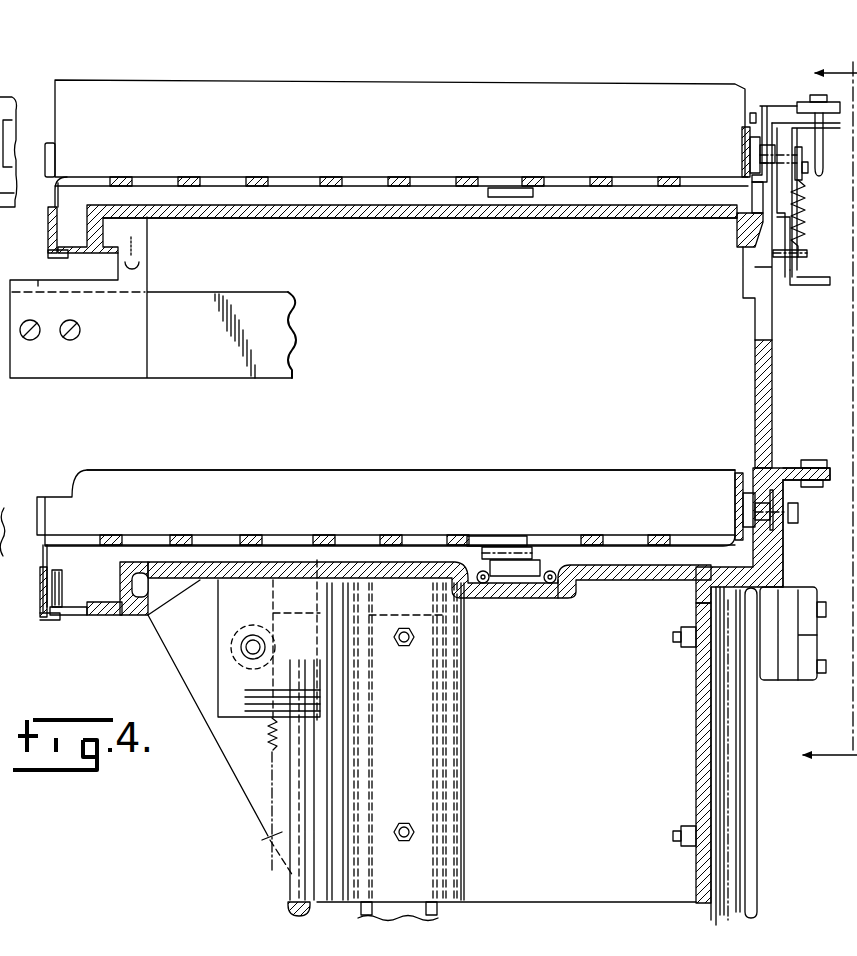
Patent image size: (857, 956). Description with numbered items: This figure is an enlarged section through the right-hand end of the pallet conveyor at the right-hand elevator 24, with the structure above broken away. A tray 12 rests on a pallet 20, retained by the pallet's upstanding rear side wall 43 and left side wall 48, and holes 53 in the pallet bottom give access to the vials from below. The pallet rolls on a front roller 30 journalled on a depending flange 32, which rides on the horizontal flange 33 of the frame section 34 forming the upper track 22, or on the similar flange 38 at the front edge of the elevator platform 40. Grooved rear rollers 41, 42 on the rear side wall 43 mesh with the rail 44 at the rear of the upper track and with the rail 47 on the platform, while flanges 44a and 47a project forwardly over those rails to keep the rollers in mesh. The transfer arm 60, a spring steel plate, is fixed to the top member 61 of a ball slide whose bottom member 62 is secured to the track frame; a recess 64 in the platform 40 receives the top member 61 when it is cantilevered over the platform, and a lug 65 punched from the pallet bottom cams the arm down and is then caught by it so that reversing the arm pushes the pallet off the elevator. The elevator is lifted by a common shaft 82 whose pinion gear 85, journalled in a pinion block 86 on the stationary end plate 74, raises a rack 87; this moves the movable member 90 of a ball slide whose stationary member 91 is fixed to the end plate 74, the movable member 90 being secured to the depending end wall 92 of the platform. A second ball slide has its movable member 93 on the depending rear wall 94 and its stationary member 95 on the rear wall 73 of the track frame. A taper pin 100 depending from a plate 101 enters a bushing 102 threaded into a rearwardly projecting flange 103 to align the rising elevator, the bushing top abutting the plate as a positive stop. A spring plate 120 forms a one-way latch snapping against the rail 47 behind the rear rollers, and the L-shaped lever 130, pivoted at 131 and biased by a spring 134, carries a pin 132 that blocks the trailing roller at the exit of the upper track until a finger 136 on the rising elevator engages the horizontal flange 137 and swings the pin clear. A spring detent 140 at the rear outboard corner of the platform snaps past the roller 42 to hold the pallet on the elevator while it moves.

The tray 12 is at (433, 81).
The pallet 20 is at (462, 469).
The upper track 22 is at (638, 228).
The right-hand elevator 24 is at (523, 905).
The roller 30 is at (64, 588).
The depending flange 32 is at (41, 565).
The horizontal flange 33 is at (50, 250).
The frame section 34 is at (432, 218).
The flange 38 is at (80, 615).
The elevator platform 40 is at (617, 565).
The rear roller 41 is at (752, 152).
The rear roller 42 is at (753, 516).
The rear side wall 43 is at (750, 140).
The rail 44 is at (750, 200).
The flange 44a is at (751, 118).
The rail 47 is at (2, 515).
The flange 47a is at (740, 490).
The left side wall 48 is at (386, 440).
The hole 53 is at (346, 532).
The transfer arm 60 is at (520, 553).
The top member 61 is at (567, 547).
The bottom member 62 is at (503, 587).
The recess 64 is at (557, 597).
The lug 65 is at (532, 197).
The rear wall 73 is at (755, 399).
The end plate 74 is at (243, 792).
The common shaft 82 is at (246, 646).
The pinion gear 85 is at (253, 668).
The pinion block 86 is at (235, 720).
The rack 87 is at (277, 830).
The movable member 90 is at (373, 914).
The stationary member 91 is at (460, 900).
The depending end wall 92 is at (456, 741).
The movable member 93 is at (710, 857).
The depending rear wall 94 is at (697, 767).
The stationary member 95 is at (727, 830).
The taper pin 100 is at (808, 100).
The plate 101 is at (797, 102).
The bushing 102 is at (832, 460).
The rearwardly projecting flange 103 is at (785, 467).
The spring plate 120 is at (790, 537).
The L-shaped lever 130 is at (787, 270).
The pivot 131 is at (806, 180).
The pin 132 is at (762, 130).
The spring 134 is at (806, 225).
The finger 136 is at (805, 682).
The horizontal flange 137 is at (808, 286).
The spring detent 140 is at (767, 503).